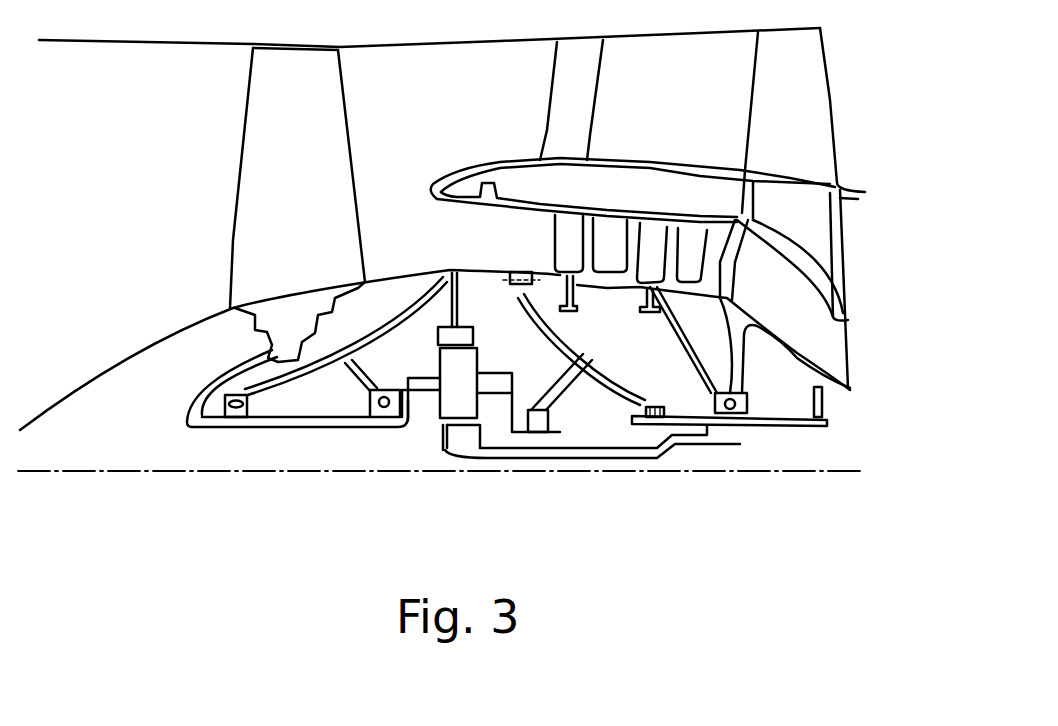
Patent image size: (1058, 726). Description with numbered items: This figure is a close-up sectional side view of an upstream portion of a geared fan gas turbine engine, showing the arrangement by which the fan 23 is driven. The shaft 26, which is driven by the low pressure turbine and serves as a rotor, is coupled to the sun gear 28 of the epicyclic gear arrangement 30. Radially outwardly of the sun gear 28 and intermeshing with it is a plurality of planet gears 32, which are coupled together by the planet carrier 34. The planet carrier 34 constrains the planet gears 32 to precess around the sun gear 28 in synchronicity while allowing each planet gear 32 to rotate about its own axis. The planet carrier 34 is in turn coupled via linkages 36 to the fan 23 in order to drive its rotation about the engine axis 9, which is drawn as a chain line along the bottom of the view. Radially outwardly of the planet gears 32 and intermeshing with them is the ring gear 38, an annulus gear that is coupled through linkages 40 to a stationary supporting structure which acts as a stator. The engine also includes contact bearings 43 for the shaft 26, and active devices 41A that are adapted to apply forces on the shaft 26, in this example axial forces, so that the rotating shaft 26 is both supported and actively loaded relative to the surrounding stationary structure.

The engine axis 9 is at (220, 472).
The fan 23 is at (258, 182).
The shaft 26 is at (617, 450).
The sun gear 28 is at (460, 437).
The epicyclic gear arrangement 30 is at (407, 445).
The planet gears 32 is at (443, 400).
The planet carrier 34 is at (500, 420).
The linkages 36 is at (407, 402).
The ring gear 38 is at (437, 338).
The linkages 40 is at (462, 312).
The active devices 41A is at (830, 402).
The contact bearings 43 is at (743, 425).